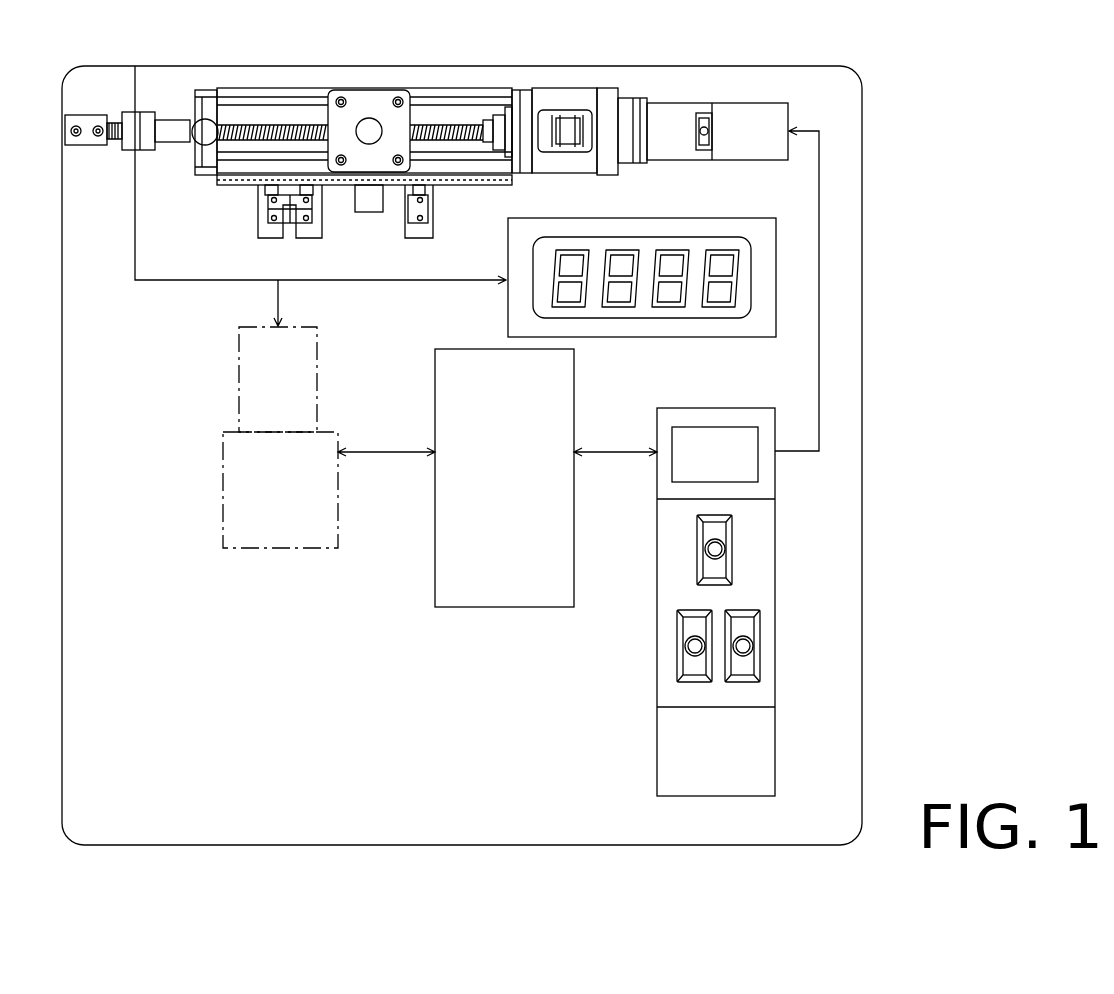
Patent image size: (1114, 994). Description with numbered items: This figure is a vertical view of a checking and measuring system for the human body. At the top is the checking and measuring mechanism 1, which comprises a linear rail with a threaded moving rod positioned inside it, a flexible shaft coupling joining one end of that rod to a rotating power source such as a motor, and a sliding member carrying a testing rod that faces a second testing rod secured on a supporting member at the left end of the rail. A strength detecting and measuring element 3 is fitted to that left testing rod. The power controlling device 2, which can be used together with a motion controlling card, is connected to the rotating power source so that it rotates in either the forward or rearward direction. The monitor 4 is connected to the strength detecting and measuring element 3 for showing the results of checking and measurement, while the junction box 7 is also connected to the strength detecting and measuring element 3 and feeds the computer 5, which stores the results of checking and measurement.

The checking and measuring mechanism 1 is at (623, 92).
The power controlling device 2 is at (762, 583).
The strength detecting and measuring element 3 is at (135, 66).
The monitor 4 is at (768, 270).
The computer 5 is at (487, 607).
The junction box 7 is at (308, 548).